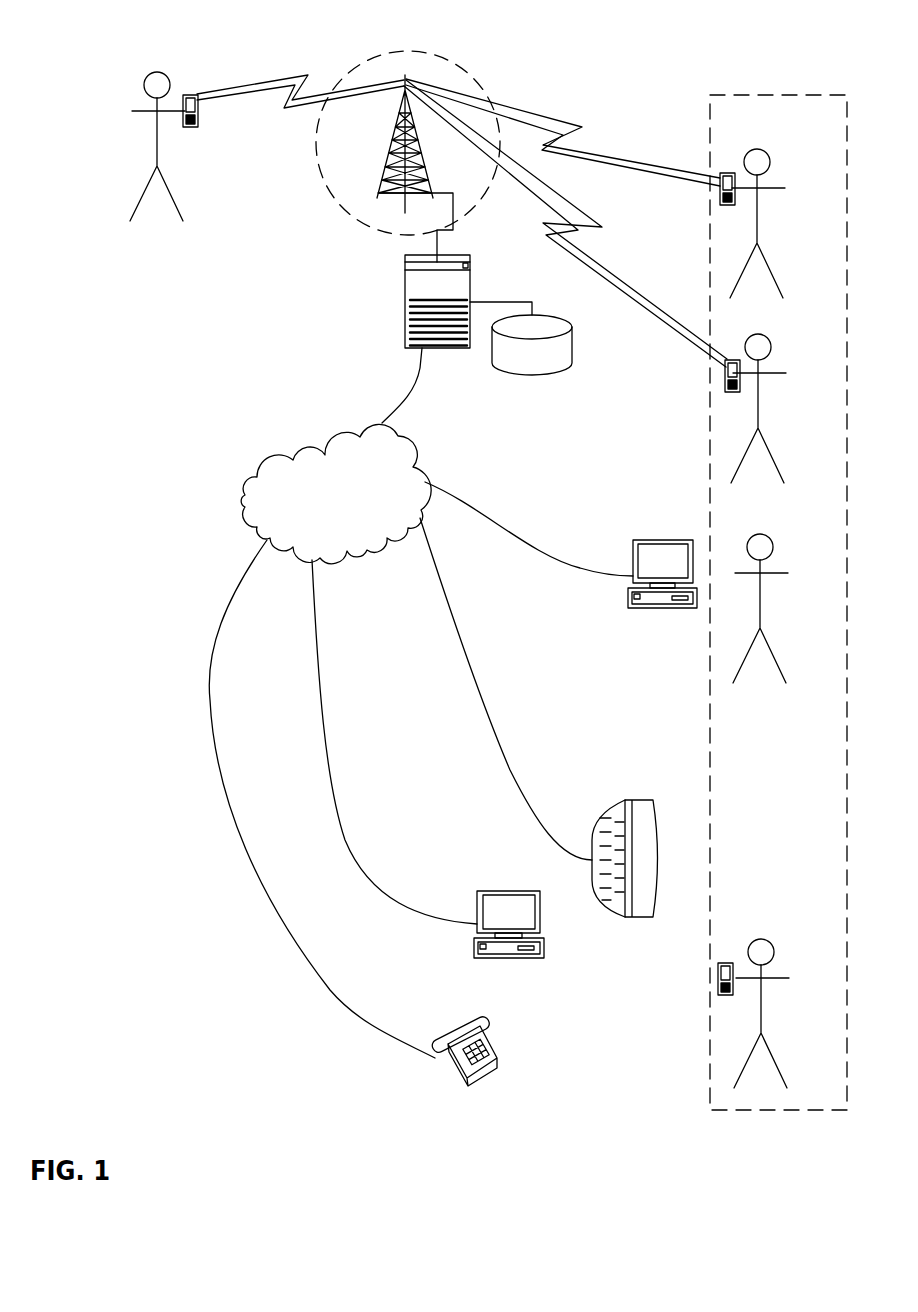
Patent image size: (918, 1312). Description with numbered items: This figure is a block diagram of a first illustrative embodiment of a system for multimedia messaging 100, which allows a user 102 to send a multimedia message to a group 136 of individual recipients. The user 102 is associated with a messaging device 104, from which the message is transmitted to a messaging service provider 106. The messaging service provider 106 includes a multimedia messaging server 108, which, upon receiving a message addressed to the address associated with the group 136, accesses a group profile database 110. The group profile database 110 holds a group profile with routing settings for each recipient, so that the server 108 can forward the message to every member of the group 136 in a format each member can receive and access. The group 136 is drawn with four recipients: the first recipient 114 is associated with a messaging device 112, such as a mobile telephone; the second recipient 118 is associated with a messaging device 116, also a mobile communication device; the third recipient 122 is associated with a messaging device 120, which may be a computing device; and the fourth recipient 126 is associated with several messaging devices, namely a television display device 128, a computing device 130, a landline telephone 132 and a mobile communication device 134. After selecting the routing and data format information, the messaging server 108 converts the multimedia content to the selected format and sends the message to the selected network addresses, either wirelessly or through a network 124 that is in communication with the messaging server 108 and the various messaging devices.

The system for multimedia messaging 100 is at (624, 58).
The user 102 is at (156, 70).
The messaging device 104 is at (197, 125).
The messaging service provider 106 is at (409, 60).
The multimedia messaging server 108 is at (405, 262).
The group profile database 110 is at (532, 373).
The messaging device 112 is at (720, 203).
The first recipient 114 is at (757, 148).
The messaging device 116 is at (725, 390).
The second recipient 118 is at (758, 334).
The messaging device 120 is at (663, 608).
The third recipient 122 is at (760, 533).
The network 124 is at (245, 500).
The fourth recipient 126 is at (761, 938).
The television display device 128 is at (653, 800).
The computing device 130 is at (507, 891).
The landline telephone 132 is at (463, 1015).
The mobile communication device 134 is at (720, 995).
The group 136 is at (712, 1085).